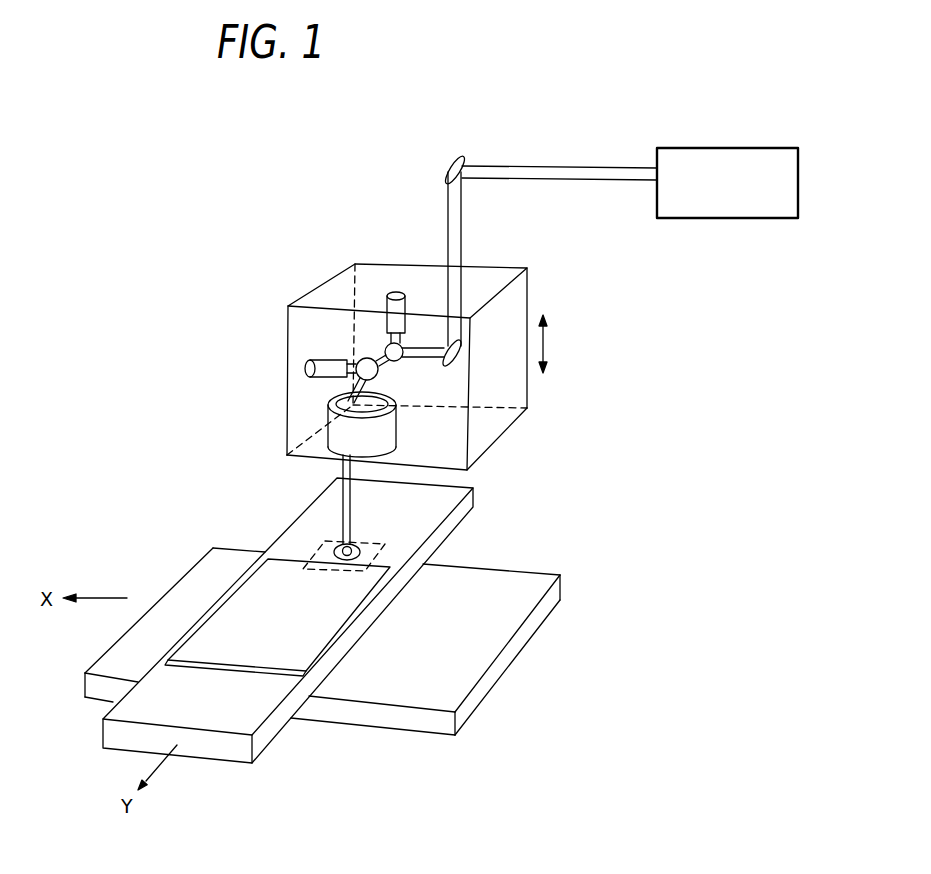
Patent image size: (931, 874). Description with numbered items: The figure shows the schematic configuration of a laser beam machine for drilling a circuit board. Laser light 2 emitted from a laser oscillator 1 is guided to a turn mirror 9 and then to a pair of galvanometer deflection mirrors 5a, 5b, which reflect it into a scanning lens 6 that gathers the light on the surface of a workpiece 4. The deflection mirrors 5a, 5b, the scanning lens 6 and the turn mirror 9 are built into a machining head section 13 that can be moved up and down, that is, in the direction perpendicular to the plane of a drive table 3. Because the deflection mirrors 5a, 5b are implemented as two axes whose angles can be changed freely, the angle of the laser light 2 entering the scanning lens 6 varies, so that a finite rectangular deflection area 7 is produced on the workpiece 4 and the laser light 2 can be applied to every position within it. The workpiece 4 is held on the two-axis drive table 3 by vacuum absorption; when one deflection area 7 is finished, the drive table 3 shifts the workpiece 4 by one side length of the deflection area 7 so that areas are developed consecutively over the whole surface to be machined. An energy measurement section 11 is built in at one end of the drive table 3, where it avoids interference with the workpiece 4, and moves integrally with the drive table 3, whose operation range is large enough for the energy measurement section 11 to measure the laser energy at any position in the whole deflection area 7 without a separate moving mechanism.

The laser oscillator 1 is at (728, 219).
The laser light 2 is at (457, 218).
The drive table 3 is at (447, 696).
The workpiece 4 is at (297, 648).
The deflection mirror 5a is at (395, 291).
The deflection mirror 5b is at (301, 369).
The scanning lens 6 is at (335, 428).
The deflection area 7 is at (385, 544).
The turn mirror 9 is at (460, 357).
The energy measurement section 11 is at (293, 525).
The machining head section 13 is at (530, 283).